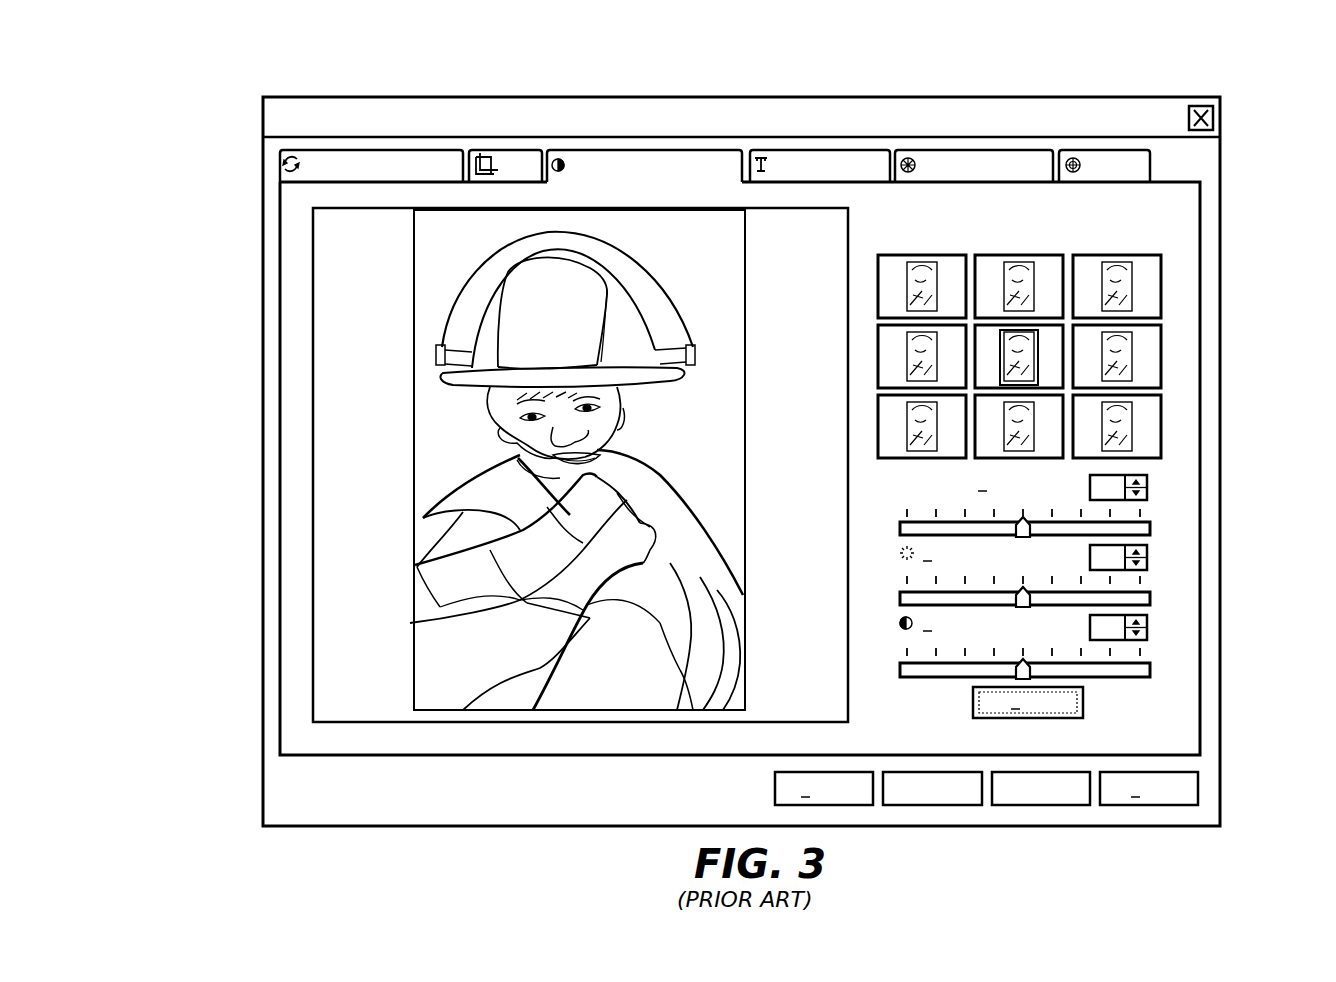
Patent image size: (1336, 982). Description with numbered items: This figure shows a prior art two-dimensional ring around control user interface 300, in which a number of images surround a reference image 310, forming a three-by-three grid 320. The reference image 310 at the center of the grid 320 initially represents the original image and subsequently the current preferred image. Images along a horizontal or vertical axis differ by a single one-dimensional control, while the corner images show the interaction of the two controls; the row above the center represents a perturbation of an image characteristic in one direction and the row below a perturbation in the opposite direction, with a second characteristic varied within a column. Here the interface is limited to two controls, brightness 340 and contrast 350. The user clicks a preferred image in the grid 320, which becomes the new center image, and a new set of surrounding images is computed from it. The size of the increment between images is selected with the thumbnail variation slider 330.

The 2-d ring around control user interface 300 is at (717, 77).
The reference image 310 is at (415, 352).
The 3×3 grid 320 is at (1172, 342).
The thumbnail variation slider 330 is at (1150, 534).
The brightness control 340 is at (1150, 604).
The contrast control 350 is at (1150, 671).